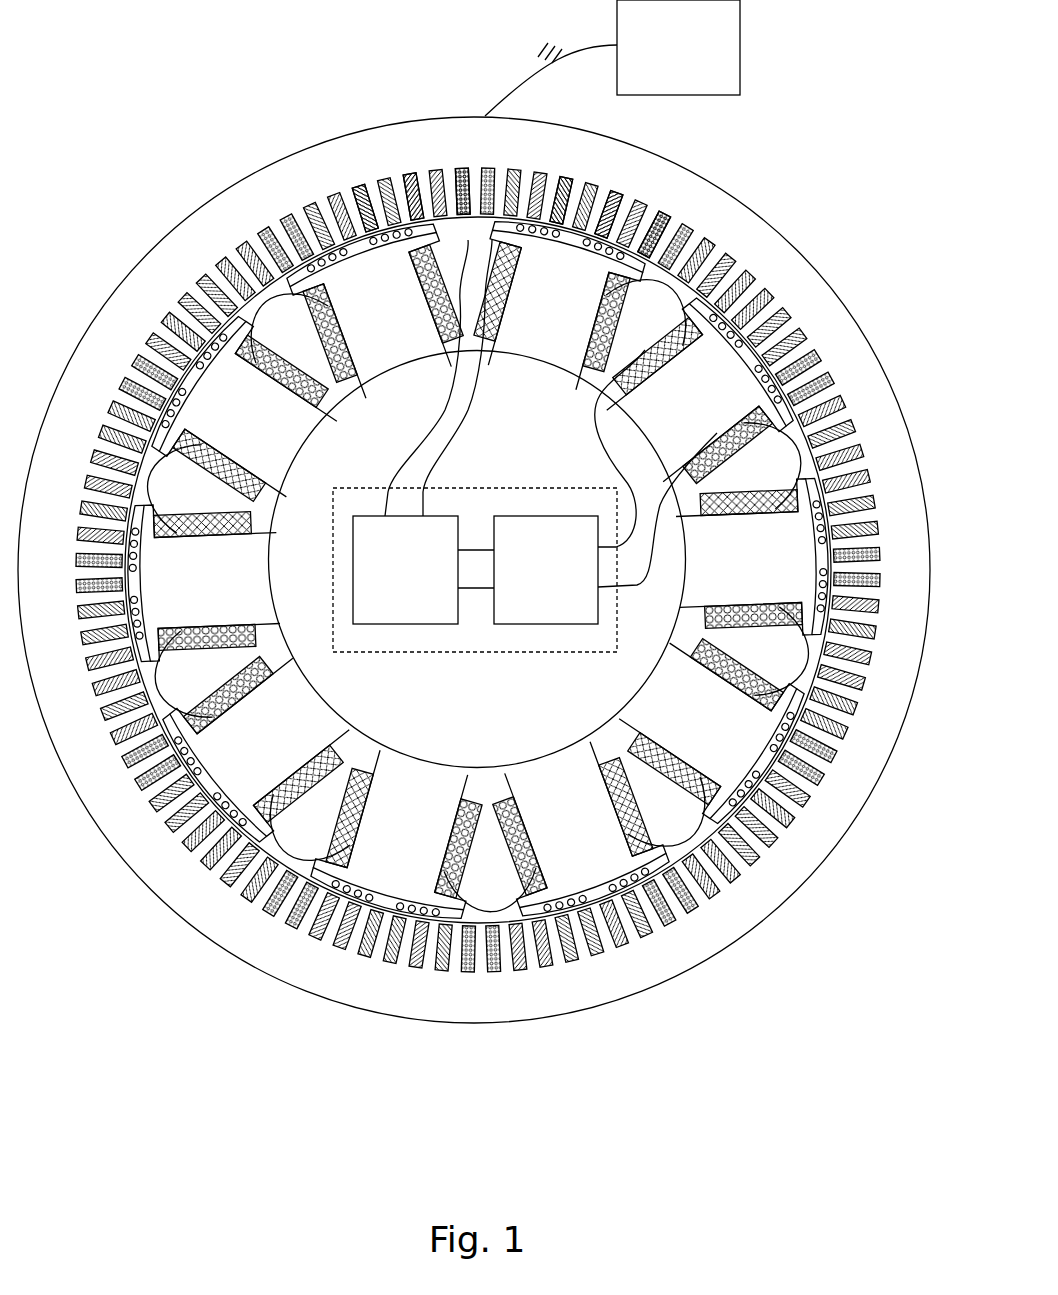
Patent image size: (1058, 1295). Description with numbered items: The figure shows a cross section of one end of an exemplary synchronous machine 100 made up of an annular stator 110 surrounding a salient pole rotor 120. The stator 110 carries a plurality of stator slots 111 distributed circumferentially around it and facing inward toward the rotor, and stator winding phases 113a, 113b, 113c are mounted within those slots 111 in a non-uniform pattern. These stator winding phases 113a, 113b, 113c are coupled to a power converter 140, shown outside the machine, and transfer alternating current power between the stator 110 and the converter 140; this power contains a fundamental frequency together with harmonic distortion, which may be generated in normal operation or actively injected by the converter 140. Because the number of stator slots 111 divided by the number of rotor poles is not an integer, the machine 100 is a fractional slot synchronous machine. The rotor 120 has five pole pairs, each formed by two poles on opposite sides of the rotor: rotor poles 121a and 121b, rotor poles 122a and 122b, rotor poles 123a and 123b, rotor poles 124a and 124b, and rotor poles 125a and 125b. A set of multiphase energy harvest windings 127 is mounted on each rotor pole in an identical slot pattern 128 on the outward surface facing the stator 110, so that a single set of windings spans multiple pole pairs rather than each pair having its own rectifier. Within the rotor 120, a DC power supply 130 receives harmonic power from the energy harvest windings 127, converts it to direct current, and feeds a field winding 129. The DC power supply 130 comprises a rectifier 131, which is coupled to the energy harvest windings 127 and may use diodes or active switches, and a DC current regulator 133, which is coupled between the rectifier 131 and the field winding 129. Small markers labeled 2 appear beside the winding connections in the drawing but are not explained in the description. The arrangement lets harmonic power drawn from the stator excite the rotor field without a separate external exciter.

The synchronous machine 100 is at (797, 172).
The stator 110 is at (226, 200).
The stator slots 111 is at (328, 198).
The stator winding phase 113a is at (348, 210).
The stator winding phase 113b is at (408, 180).
The stator winding phase 113c is at (490, 173).
The rotor 120 is at (477, 559).
The rotor pole 121a is at (753, 559).
The rotor pole 122a is at (694, 399).
The rotor pole 123a is at (552, 305).
The rotor pole 124a is at (382, 312).
The rotor pole 125a is at (249, 417).
The rotor pole 121b is at (203, 581).
The rotor pole 122b is at (262, 740).
The rotor pole 123b is at (403, 834).
The rotor pole 124b is at (573, 828).
The rotor pole 125b is at (706, 722).
The multiphase energy harvest windings 127 is at (445, 400).
The slot pattern 128 is at (195, 366).
The field winding 129 is at (610, 463).
The DC power supply 130 is at (524, 487).
The rectifier 131 is at (395, 625).
The DC current regulator 133 is at (527, 625).
The power converter 140 is at (612, 58).
The field winding connection conductors 2 is at (801, 454).